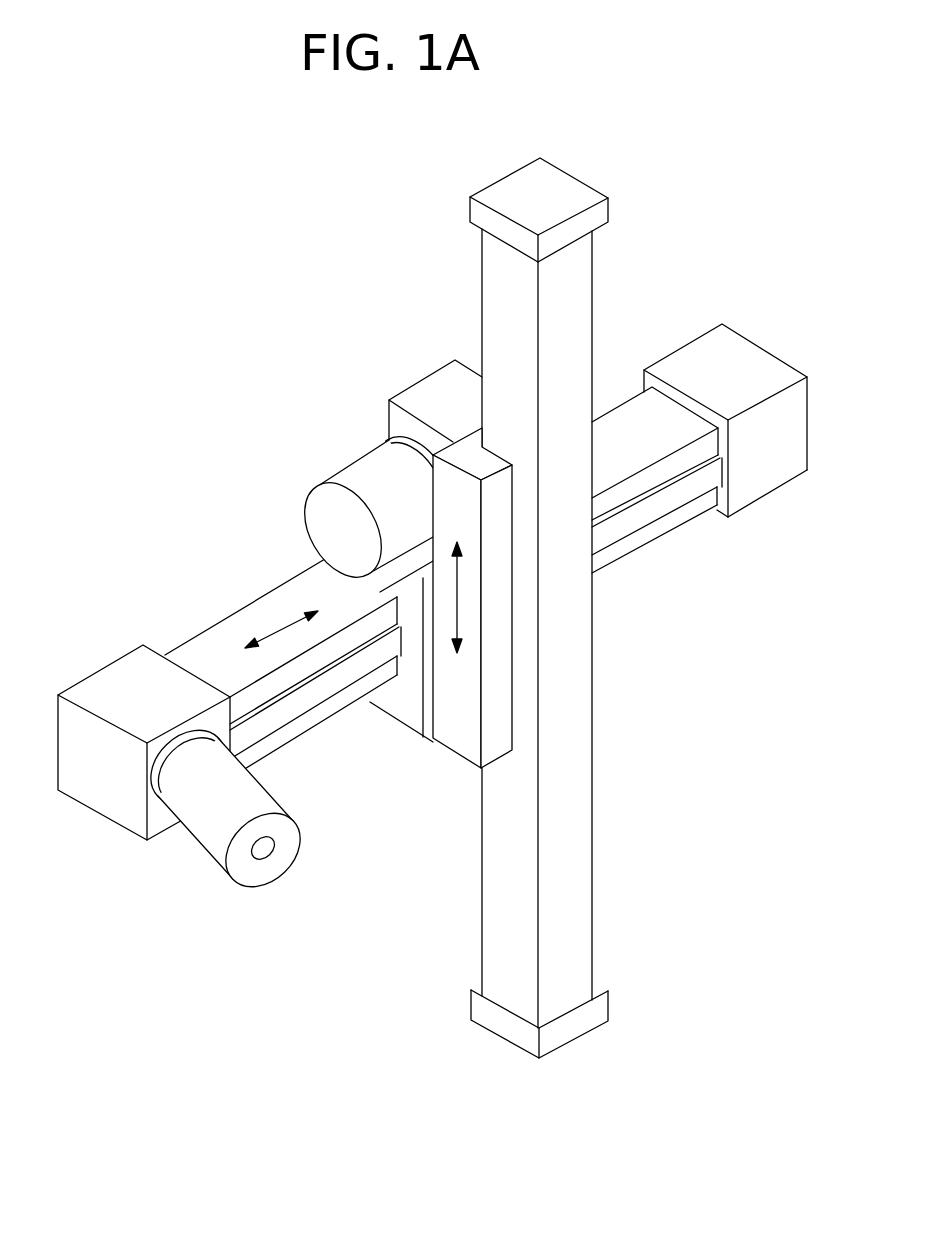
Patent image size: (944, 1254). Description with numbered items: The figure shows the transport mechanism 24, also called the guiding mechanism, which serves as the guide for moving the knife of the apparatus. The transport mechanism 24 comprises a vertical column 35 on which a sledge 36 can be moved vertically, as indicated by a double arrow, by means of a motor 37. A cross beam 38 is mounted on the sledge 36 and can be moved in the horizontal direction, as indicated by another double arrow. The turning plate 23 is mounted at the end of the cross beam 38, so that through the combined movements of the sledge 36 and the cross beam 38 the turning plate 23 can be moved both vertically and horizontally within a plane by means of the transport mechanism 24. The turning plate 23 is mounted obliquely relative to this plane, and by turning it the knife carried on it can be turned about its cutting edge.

The turning plate 23 is at (252, 870).
The transport mechanism 24 is at (432, 608).
The column 35 is at (575, 833).
The sledge 36 is at (462, 740).
The motor 37 is at (318, 505).
The cross beam 38 is at (242, 620).